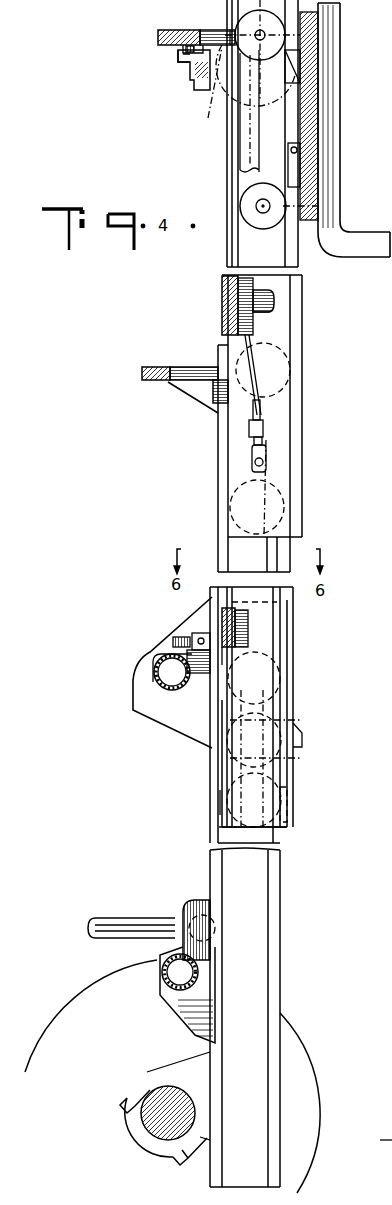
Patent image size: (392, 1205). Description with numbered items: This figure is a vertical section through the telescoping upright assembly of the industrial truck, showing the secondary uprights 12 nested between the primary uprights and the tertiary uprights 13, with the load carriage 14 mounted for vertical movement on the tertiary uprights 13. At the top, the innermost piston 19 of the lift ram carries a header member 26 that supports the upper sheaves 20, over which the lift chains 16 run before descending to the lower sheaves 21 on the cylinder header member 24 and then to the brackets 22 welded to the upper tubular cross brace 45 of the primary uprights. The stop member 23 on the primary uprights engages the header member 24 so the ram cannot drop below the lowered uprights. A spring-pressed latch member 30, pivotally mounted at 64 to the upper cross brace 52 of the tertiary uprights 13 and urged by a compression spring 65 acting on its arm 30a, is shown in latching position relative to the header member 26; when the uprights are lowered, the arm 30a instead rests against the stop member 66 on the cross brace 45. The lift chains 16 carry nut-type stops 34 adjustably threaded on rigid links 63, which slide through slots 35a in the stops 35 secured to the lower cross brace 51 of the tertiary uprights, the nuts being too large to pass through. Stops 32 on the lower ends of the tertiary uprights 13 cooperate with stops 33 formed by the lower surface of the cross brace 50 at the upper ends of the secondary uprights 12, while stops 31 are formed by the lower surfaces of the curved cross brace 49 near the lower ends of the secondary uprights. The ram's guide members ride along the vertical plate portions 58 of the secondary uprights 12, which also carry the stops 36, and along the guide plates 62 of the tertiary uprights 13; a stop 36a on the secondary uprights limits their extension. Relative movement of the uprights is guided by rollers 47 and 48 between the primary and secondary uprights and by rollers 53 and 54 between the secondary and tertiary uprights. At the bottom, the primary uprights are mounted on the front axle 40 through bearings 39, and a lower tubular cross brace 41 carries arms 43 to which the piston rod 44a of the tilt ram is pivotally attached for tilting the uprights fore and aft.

The secondary uprights 12 is at (222, 513).
The tertiary uprights 13 is at (300, 522).
The load carriage 14 is at (334, 97).
The lift chains 16 is at (268, 470).
The second telescoping piston 19 is at (240, 142).
The sheaves 20 is at (272, 78).
The sheaves 21 is at (268, 708).
The brackets 22 is at (199, 632).
The stop member 23 is at (185, 1020).
The header member 24 is at (302, 738).
The header member 26 is at (208, 91).
The latch member 30 is at (201, 83).
The arm 30a is at (179, 60).
The stops 31 is at (228, 660).
The stops 32 is at (210, 400).
The stops 33 is at (197, 380).
The stops 34 is at (264, 428).
The stops 35 is at (276, 300).
The slots 35a is at (266, 315).
The stops 36 is at (222, 820).
The stop 36a is at (288, 805).
The bearings 39 is at (135, 1138).
The front axle 40 is at (163, 1088).
The tubular cross brace 41 is at (165, 960).
The arms 43 is at (214, 926).
The piston rod 44a is at (133, 911).
The tubular cross brace 45 is at (156, 686).
The rollers 47 is at (282, 672).
The rollers 48 is at (222, 805).
The cross brace 49 is at (249, 632).
The cross brace 50 is at (154, 367).
The cross brace 51 is at (222, 300).
The cross brace 52 is at (182, 30).
The rollers 53 is at (292, 355).
The rollers 54 is at (285, 503).
The vertical plate portions 58 is at (216, 769).
The guide plates 62 is at (236, 246).
The rigid links 63 is at (262, 405).
The pivot 64 is at (203, 47).
The compression spring 65 is at (183, 50).
The stop member 66 is at (187, 639).